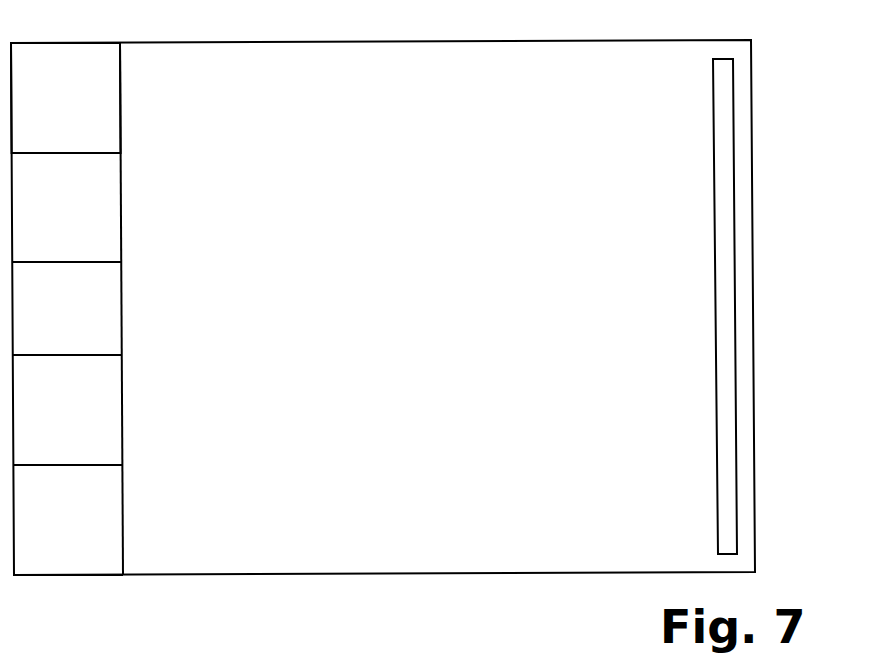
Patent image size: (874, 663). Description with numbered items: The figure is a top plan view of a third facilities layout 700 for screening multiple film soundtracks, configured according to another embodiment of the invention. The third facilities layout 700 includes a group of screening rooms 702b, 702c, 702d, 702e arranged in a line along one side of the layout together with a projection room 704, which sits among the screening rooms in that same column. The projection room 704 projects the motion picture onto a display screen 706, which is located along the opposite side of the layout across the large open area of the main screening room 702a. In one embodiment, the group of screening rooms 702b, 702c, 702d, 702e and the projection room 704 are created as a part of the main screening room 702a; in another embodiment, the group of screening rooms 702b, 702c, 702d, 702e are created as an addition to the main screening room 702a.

The third facilities layout 700 is at (736, 30).
The main screening room 702a is at (633, 547).
The screening room 702b is at (66, 98).
The screening room 702c is at (67, 207).
The screening room 702d is at (68, 410).
The screening room 702e is at (68, 520).
The projection room 704 is at (67, 308).
The display screen 706 is at (733, 103).